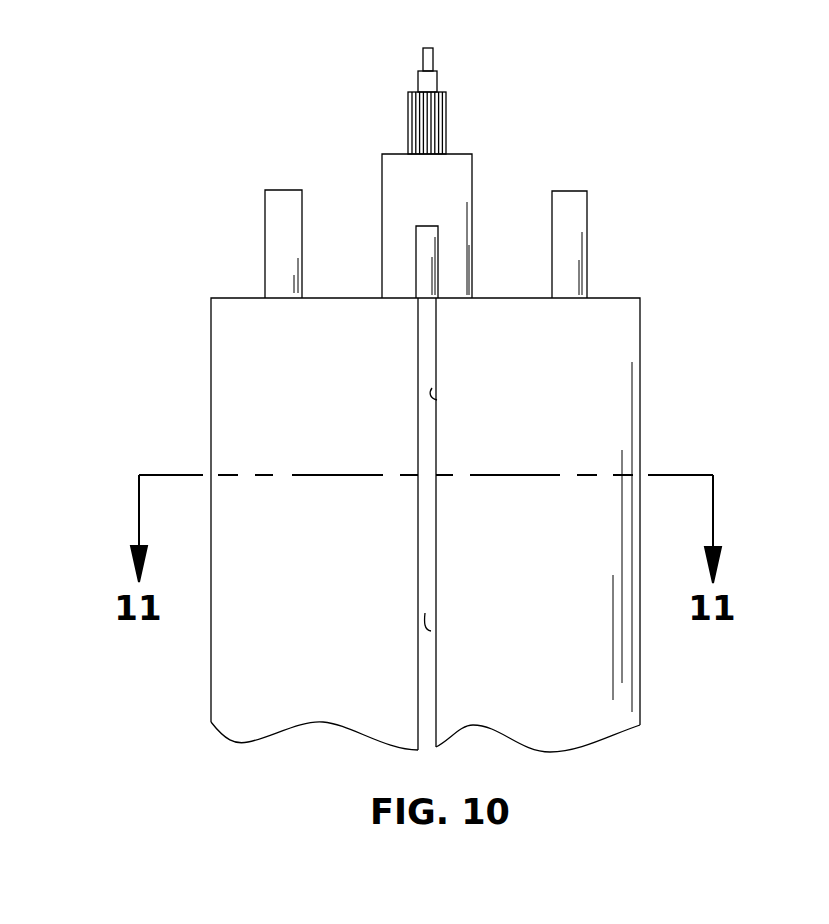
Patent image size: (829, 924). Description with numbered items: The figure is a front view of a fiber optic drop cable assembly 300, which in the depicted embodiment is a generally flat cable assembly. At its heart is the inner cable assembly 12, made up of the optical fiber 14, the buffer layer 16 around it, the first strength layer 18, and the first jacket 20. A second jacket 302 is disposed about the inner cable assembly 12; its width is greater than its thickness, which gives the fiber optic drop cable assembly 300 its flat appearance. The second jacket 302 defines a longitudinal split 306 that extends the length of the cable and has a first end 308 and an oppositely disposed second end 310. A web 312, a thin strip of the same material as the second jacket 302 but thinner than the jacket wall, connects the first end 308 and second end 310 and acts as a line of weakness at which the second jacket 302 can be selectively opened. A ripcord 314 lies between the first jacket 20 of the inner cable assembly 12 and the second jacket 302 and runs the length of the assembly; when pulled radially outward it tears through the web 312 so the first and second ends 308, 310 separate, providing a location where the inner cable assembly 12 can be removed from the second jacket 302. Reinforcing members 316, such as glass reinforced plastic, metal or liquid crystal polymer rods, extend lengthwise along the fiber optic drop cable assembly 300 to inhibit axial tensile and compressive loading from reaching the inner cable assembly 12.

The inner cable assembly 12 is at (488, 135).
The optical fiber 14 is at (433, 53).
The buffer layer 16 is at (436, 80).
The first strength layer 18 is at (408, 112).
The first jacket 20 is at (382, 173).
The fiber optic drop cable assembly 300 is at (150, 290).
The second jacket 302 is at (640, 326).
The longitudinal split 306 is at (408, 688).
The first end 308 is at (425, 350).
The second end 310 is at (437, 400).
The web 312 is at (431, 631).
The ripcord 314 is at (438, 240).
The reinforcing members 316 is at (265, 203).